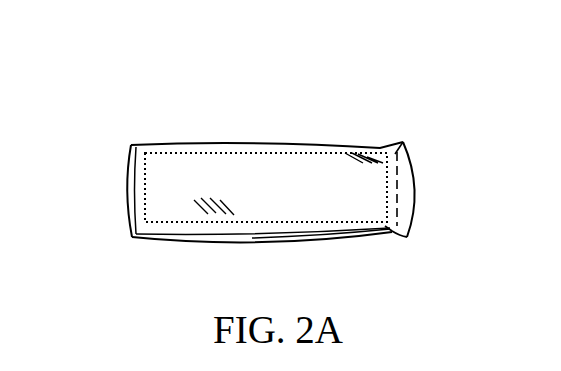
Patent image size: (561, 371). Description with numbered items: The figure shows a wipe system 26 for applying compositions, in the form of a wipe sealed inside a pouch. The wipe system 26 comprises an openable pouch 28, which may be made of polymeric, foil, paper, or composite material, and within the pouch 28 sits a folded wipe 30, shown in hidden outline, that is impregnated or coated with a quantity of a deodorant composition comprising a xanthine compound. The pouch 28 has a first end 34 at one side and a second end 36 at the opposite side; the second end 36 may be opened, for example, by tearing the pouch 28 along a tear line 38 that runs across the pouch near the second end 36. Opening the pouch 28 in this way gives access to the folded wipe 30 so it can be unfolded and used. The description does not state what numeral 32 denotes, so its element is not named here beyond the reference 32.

The wipe system 26 is at (140, 146).
The openable pouch 28 is at (203, 147).
The folded wipe 30 is at (286, 152).
The second end of band 32 is at (411, 166).
The first end 34 is at (128, 190).
The second end 36 is at (407, 185).
The tear line 38 is at (405, 148).